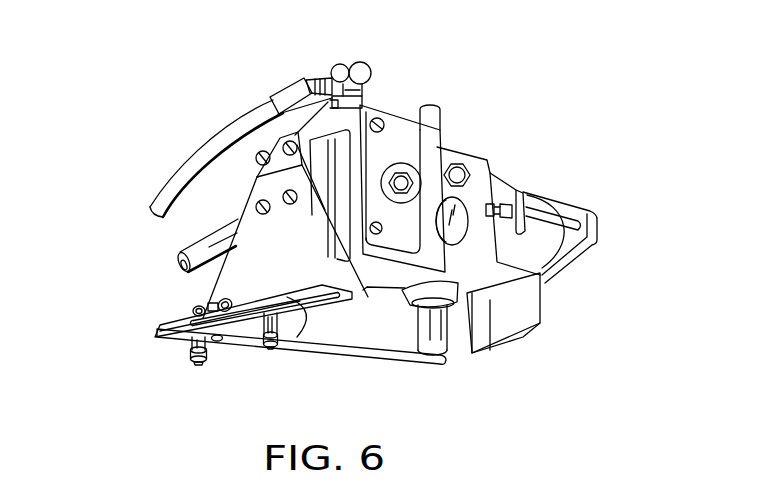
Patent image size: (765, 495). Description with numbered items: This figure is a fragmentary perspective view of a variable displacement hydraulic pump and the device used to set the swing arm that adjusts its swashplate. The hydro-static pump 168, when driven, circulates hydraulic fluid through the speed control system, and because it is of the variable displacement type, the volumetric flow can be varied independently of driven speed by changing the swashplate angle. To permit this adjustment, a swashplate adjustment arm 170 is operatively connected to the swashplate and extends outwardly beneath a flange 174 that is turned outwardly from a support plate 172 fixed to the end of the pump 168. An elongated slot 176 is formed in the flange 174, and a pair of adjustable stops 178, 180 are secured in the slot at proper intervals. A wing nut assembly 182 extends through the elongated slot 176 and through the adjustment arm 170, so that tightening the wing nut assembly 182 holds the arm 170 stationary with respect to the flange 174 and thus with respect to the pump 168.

The hydro-static pump 168 is at (395, 127).
The swashplate adjustment arm 170 is at (240, 340).
The support plate 172 is at (218, 236).
The flange 174 is at (338, 324).
The elongated slot 176 is at (315, 313).
The adjustable stop 178 is at (266, 346).
The adjustable stop 180 is at (187, 351).
The wing nut assembly 182 is at (193, 309).